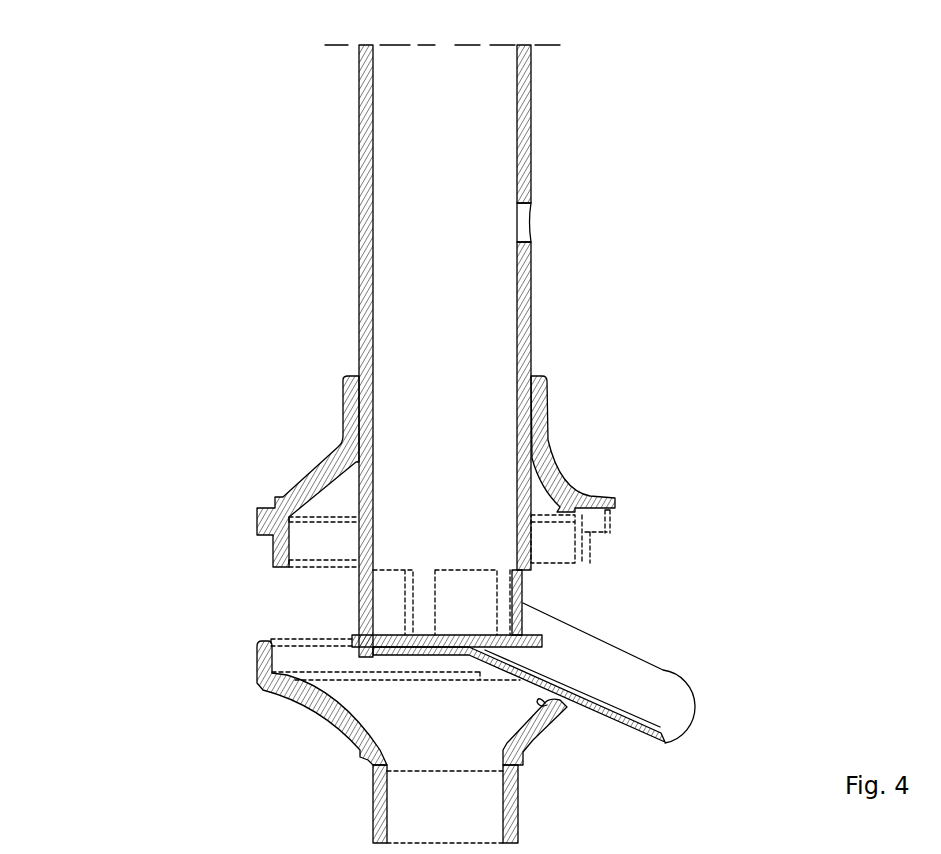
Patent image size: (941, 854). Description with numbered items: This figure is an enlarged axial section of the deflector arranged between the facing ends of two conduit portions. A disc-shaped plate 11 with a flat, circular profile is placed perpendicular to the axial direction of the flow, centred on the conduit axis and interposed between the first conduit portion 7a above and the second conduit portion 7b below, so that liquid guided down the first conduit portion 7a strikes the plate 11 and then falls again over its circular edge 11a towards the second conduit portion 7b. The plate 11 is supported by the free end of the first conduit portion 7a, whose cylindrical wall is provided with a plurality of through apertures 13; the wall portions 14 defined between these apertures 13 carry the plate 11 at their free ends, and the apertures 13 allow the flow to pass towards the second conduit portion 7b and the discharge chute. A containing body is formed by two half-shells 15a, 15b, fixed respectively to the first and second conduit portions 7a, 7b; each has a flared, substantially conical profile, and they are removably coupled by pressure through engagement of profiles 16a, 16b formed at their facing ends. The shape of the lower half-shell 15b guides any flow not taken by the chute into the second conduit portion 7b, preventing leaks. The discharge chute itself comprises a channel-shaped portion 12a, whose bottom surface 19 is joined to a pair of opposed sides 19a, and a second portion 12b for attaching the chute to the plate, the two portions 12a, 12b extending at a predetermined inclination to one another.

The first conduit portion 7a is at (528, 287).
The second conduit portion 7b is at (517, 820).
The disc-shaped plate 11 is at (524, 606).
The circular edge of the plate 11a is at (352, 633).
The channel-shaped portion of the discharge chute 12a is at (640, 753).
The second portion of the discharge chute 12b is at (388, 660).
The through apertures 13 is at (373, 583).
The conduit portions between apertures 14 is at (360, 611).
The upper half-shell 15a is at (310, 492).
The lower half-shell 15b is at (268, 700).
The engagement profile of the upper half-shell 16a is at (271, 545).
The engagement profile of the lower half-shell 16b is at (290, 638).
The bottom surface of the chute 19 is at (627, 708).
The opposed sides of the chute 19a is at (642, 677).